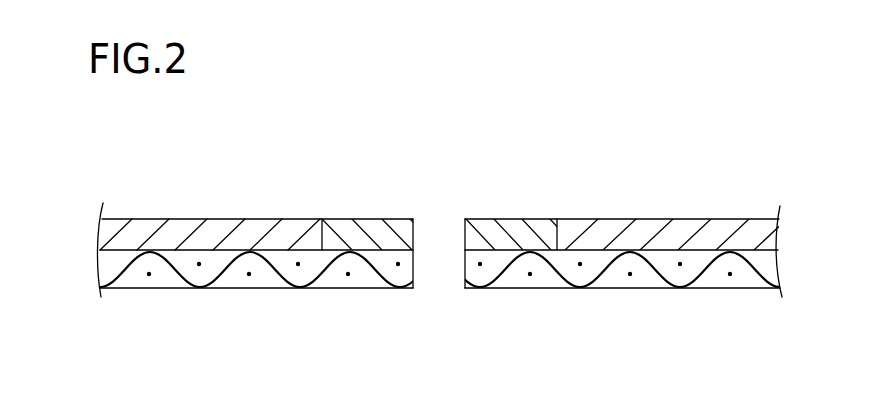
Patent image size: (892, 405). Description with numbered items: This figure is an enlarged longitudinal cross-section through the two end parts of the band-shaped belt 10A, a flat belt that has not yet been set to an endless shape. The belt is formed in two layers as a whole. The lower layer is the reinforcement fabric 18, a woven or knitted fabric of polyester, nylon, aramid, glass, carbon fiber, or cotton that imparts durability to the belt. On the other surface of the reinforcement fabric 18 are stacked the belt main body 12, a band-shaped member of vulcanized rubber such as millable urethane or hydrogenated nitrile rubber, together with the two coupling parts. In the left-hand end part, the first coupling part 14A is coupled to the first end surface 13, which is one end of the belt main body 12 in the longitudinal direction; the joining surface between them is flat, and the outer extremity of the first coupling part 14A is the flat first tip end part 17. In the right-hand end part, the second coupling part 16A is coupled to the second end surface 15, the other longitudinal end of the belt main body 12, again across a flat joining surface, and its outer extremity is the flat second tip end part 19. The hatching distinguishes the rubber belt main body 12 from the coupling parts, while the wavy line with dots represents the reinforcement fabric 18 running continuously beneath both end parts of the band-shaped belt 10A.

The band-shaped belt 10A is at (642, 176).
The belt main body 12 is at (723, 235).
The first end surface 13 is at (334, 219).
The first coupling part 14A is at (379, 232).
The second end surface 15 is at (557, 227).
The second coupling part 16A is at (485, 235).
The first tip end part 17 is at (413, 237).
The reinforcement fabric 18 is at (645, 273).
The second tip end part 19 is at (465, 237).